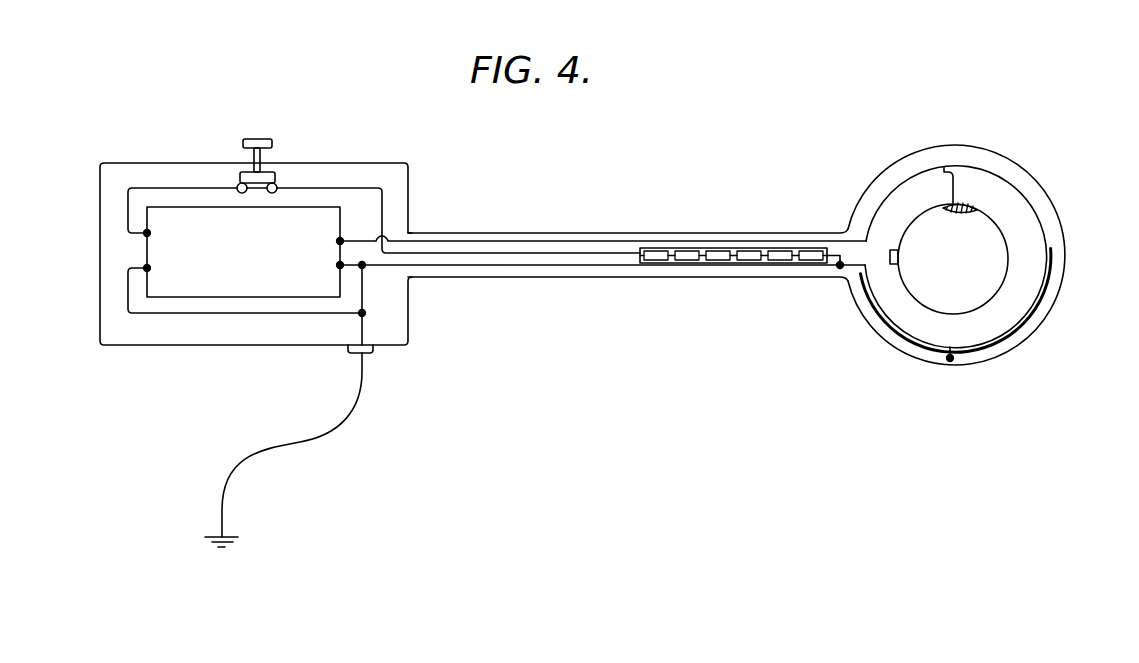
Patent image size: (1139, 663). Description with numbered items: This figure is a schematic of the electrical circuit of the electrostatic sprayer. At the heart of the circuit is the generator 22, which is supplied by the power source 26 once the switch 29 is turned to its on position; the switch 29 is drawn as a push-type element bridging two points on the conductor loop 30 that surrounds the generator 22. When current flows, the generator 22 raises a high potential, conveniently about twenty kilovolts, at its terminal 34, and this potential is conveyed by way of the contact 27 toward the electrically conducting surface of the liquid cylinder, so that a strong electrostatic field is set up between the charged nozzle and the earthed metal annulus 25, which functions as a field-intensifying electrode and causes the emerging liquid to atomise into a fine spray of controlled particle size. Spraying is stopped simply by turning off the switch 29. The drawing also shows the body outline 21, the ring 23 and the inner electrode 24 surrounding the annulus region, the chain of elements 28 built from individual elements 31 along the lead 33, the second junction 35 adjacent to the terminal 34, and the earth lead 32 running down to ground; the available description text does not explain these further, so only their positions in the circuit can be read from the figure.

The housing body 21 is at (410, 187).
The generator 22 is at (158, 247).
The ring electrode 23 is at (1050, 238).
The inner electrode 24 is at (898, 257).
The earthed metal annulus 25 is at (972, 355).
The power source 26 is at (785, 262).
The contact 27 is at (977, 210).
The resistor chain 28 is at (624, 251).
The switch 29 is at (277, 144).
The conductor loop 30 is at (128, 198).
The resistor element 31 is at (688, 262).
The ground lead 32 is at (318, 438).
The lead 33 is at (578, 240).
The terminal 34 is at (340, 240).
The junction 35 is at (340, 264).